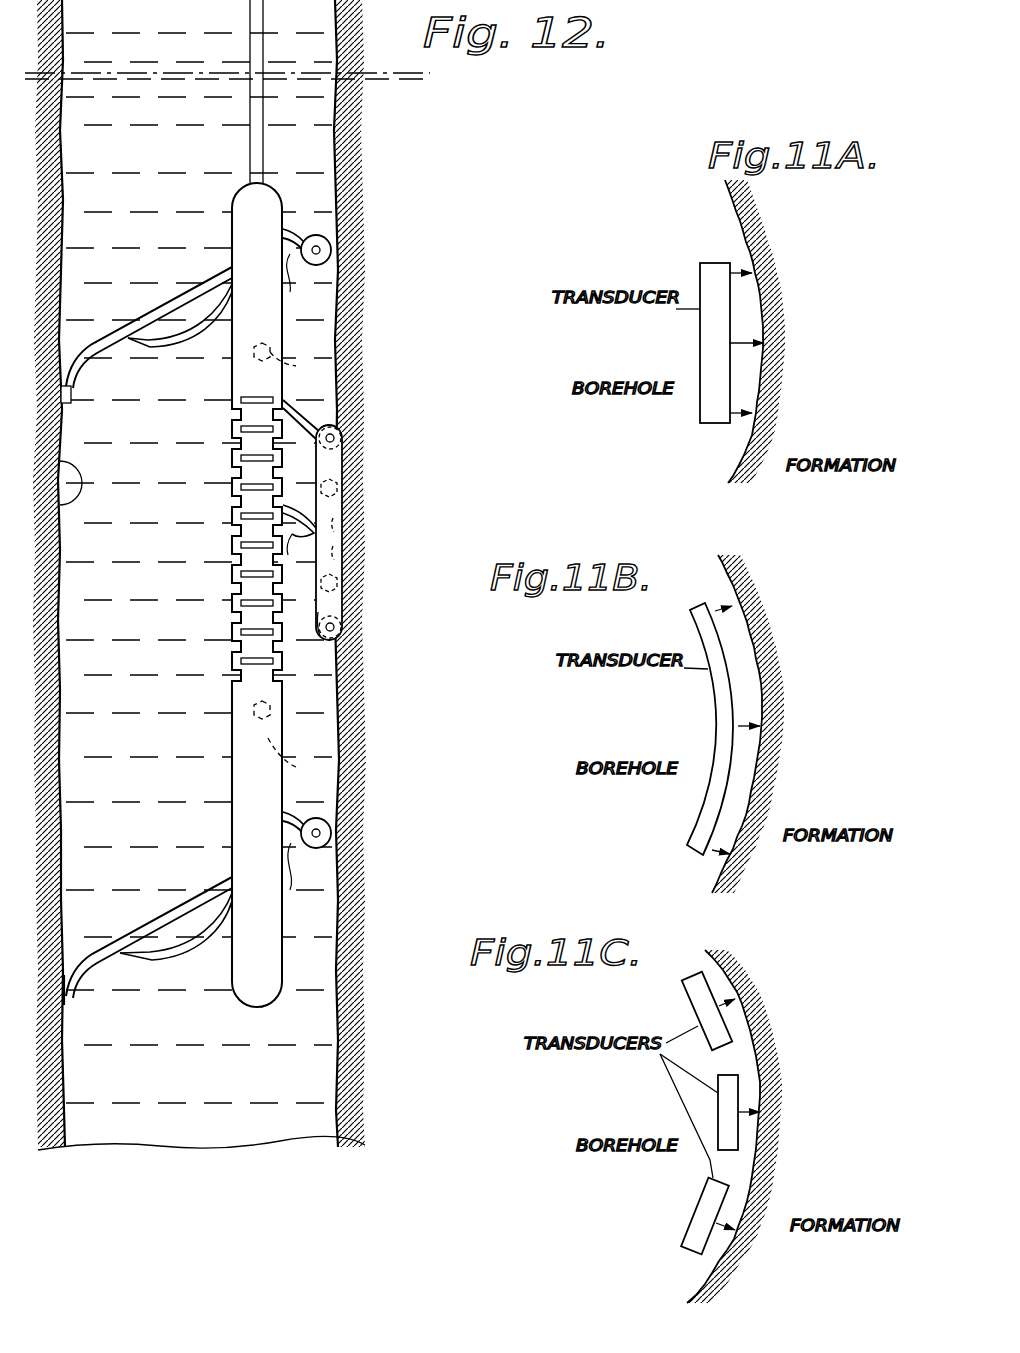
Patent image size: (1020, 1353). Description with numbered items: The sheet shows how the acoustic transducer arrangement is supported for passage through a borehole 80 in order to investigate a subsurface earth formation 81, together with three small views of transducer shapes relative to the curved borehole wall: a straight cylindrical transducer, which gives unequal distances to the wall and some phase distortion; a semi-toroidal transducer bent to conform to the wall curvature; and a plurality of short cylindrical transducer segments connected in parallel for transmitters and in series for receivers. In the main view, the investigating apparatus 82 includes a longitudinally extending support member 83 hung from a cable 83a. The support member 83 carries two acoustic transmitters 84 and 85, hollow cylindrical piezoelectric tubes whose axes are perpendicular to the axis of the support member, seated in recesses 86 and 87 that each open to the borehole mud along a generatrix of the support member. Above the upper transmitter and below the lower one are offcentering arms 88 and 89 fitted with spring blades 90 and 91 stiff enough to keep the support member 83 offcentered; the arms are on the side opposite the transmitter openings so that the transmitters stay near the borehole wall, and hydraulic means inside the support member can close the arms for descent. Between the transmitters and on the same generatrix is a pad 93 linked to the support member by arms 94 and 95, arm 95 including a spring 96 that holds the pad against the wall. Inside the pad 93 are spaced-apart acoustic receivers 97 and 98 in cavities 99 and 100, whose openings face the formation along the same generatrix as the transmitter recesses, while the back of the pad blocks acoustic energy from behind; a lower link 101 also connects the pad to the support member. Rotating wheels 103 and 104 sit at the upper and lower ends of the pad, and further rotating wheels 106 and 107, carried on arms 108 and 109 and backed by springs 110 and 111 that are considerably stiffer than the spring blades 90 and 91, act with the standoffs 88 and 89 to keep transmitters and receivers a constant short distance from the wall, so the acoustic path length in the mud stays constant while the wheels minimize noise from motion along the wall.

The borehole 80 is at (60, 519).
The subsurface earth formation 81 is at (445, 335).
The investigating apparatus 82 is at (222, 587).
The support member 83 is at (233, 741).
The cable 83a is at (257, 116).
The acoustic transmitter 84 is at (272, 350).
The acoustic transmitter 85 is at (272, 712).
The recess 86 is at (296, 367).
The recess 87 is at (295, 759).
The offcentering arm 88 is at (157, 304).
The offcentering arm 89 is at (160, 918).
The spring blade 90 is at (173, 342).
The spring blade 91 is at (177, 955).
The pad 93 is at (350, 540).
The arm 94 is at (306, 409).
The arm 95 is at (290, 514).
The spring 96 is at (300, 542).
The acoustic receiver 97 is at (346, 488).
The acoustic receiver 98 is at (346, 585).
The cavity 99 is at (346, 527).
The cavity 100 is at (346, 553).
The lower pad link arm 101 is at (316, 612).
The rotating wheel 103 is at (350, 444).
The rotating wheel 104 is at (338, 636).
The rotating wheel 106 is at (334, 252).
The rotating wheel 107 is at (334, 841).
The upper roller arm 108 is at (300, 233).
The lower roller arm 109 is at (300, 816).
The spring 110 is at (309, 878).
The spring 111 is at (307, 279).